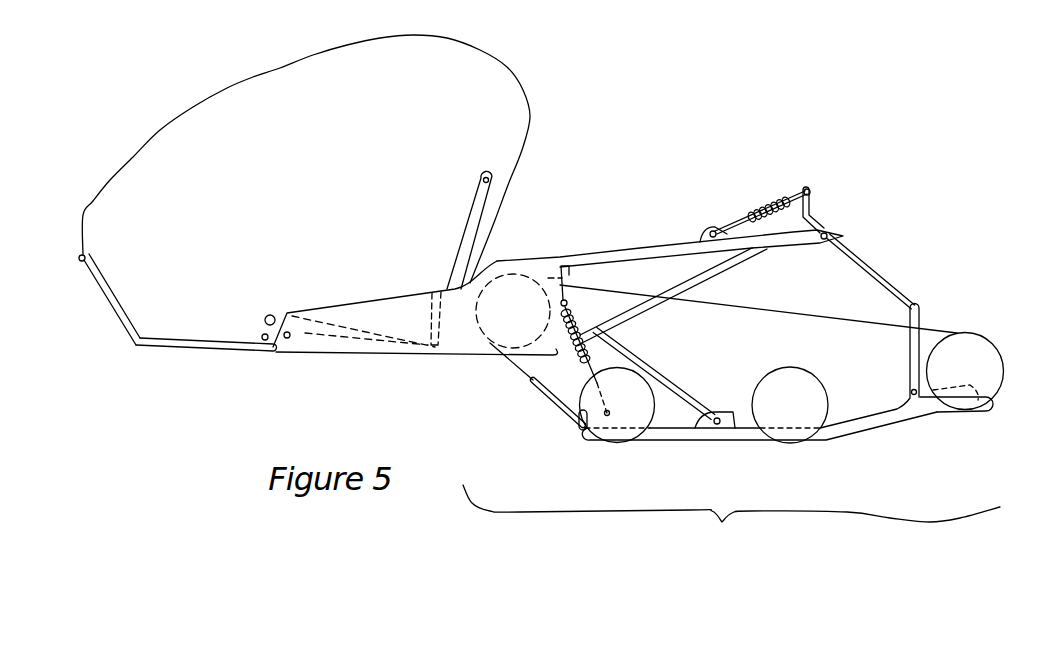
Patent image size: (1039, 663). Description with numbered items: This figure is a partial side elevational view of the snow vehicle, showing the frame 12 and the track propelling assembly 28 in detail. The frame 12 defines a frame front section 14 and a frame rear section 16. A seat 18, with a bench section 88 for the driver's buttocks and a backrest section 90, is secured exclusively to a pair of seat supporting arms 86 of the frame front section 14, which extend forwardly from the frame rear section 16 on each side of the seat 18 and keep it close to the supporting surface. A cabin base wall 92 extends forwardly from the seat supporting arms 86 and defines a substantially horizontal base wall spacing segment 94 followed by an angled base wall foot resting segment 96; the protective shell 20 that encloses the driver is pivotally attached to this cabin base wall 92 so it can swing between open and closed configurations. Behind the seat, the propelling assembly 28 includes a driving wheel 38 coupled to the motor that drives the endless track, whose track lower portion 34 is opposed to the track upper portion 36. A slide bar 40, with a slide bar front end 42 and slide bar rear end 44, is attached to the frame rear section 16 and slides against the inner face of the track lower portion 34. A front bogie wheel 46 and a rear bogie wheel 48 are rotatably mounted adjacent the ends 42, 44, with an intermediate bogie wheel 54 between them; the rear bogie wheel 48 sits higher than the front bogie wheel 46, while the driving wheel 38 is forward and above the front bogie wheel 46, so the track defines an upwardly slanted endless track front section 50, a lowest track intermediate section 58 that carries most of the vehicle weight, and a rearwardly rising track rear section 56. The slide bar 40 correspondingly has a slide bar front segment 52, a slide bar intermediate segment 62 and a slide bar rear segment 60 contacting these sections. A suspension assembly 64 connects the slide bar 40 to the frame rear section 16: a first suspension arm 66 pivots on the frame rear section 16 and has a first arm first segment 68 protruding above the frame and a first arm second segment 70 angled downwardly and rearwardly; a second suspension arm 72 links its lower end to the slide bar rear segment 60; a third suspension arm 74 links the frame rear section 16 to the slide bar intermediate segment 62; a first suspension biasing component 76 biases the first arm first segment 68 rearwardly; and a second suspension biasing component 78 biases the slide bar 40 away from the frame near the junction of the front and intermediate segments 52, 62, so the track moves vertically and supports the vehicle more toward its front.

The frame 12 is at (625, 183).
The frame front section 14 is at (203, 395).
The frame rear section 16 is at (695, 208).
The seat 18 is at (378, 366).
The protective shell 20 is at (253, 77).
The propelling assembly 28 is at (855, 290).
The track lower portion 34 is at (731, 529).
The track upper portion 36 is at (757, 296).
The driving wheel 38 is at (490, 352).
The slide bar 40 is at (737, 440).
The slide bar front end 42 is at (530, 378).
The slide bar rear end 44 is at (993, 417).
The front bogie wheel 46 is at (584, 430).
The rear bogie wheel 48 is at (993, 357).
The endless track front section 50 is at (510, 370).
The slide bar front segment 52 is at (557, 408).
The intermediate bogie wheel 54 is at (825, 425).
The track rear section 56 is at (912, 430).
The track intermediate section 58 is at (650, 441).
The slide bar rear segment 60 is at (873, 420).
The slide bar intermediate segment 62 is at (612, 443).
The suspension assembly 64 is at (885, 222).
The first suspension arm 66 is at (850, 260).
The first arm first segment 68 is at (820, 210).
The first arm second segment 70 is at (919, 290).
The second suspension arm 72 is at (910, 350).
The third suspension arm 74 is at (660, 372).
The first suspension biasing component 76 is at (768, 200).
The second suspension biasing component 78 is at (577, 334).
The seat supporting arms 86 is at (337, 348).
The bench section 88 is at (292, 357).
The backrest section 90 is at (485, 175).
The cabin base wall 92 is at (117, 367).
The base wall spacing segment 94 is at (188, 348).
The base wall foot resting segment 96 is at (117, 306).